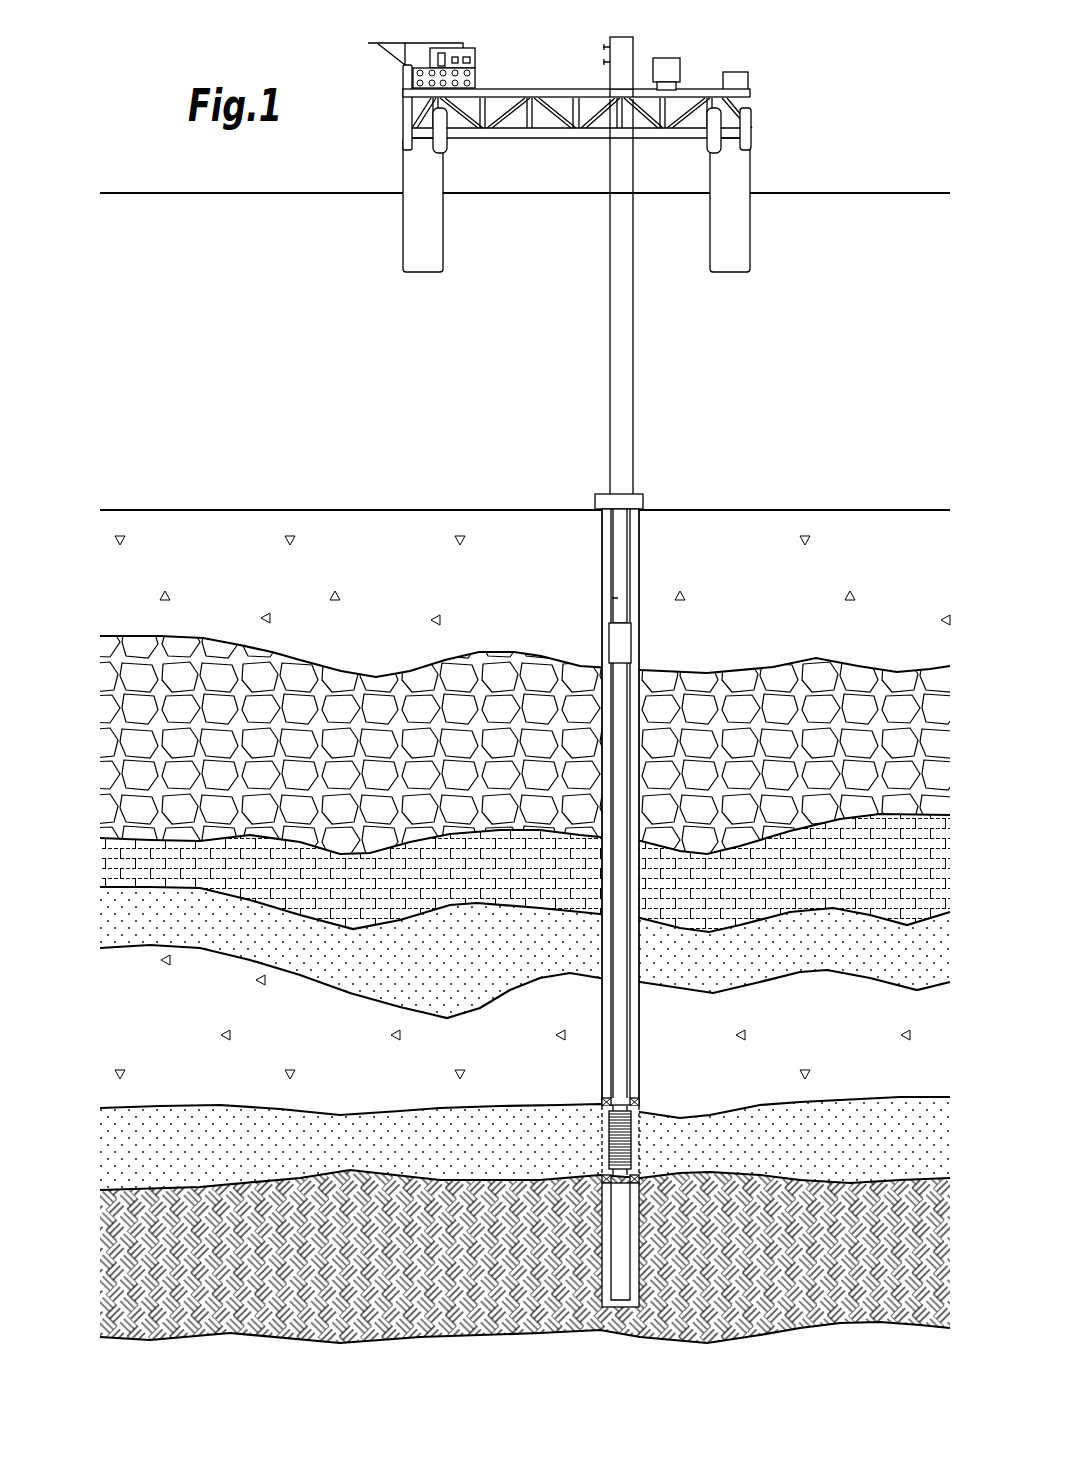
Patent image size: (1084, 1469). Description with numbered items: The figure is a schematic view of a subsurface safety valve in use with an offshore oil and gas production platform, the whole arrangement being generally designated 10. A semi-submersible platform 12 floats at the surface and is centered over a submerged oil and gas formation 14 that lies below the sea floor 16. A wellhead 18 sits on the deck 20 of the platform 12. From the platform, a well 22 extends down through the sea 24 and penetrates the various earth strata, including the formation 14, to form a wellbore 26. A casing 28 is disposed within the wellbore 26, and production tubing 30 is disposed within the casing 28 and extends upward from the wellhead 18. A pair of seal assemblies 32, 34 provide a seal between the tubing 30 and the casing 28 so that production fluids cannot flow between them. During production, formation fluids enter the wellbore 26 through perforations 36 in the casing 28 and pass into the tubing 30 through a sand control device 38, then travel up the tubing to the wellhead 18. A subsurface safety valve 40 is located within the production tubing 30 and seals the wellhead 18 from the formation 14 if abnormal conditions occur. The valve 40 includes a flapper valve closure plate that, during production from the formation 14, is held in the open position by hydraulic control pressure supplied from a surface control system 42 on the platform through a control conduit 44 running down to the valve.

The subsurface safety valve in use with offshore platform 10 is at (840, 43).
The semi-submersible platform 12 is at (747, 133).
The oil and gas formation 14 is at (837, 1160).
The sea floor 16 is at (871, 512).
The wellhead 18 is at (623, 37).
The deck 20 is at (747, 95).
The well 22 is at (610, 324).
The sea 24 is at (399, 365).
The wellbore 26 is at (633, 570).
The casing 28 is at (640, 613).
The production tubing 30 is at (615, 598).
The seal assembly 32 is at (640, 1102).
The seal assembly 34 is at (645, 1180).
The perforations 36 is at (640, 1138).
The sand control device 38 is at (609, 1145).
The subsurface safety valve 40 is at (628, 652).
The surface control system 42 is at (670, 58).
The control conduit 44 is at (610, 553).